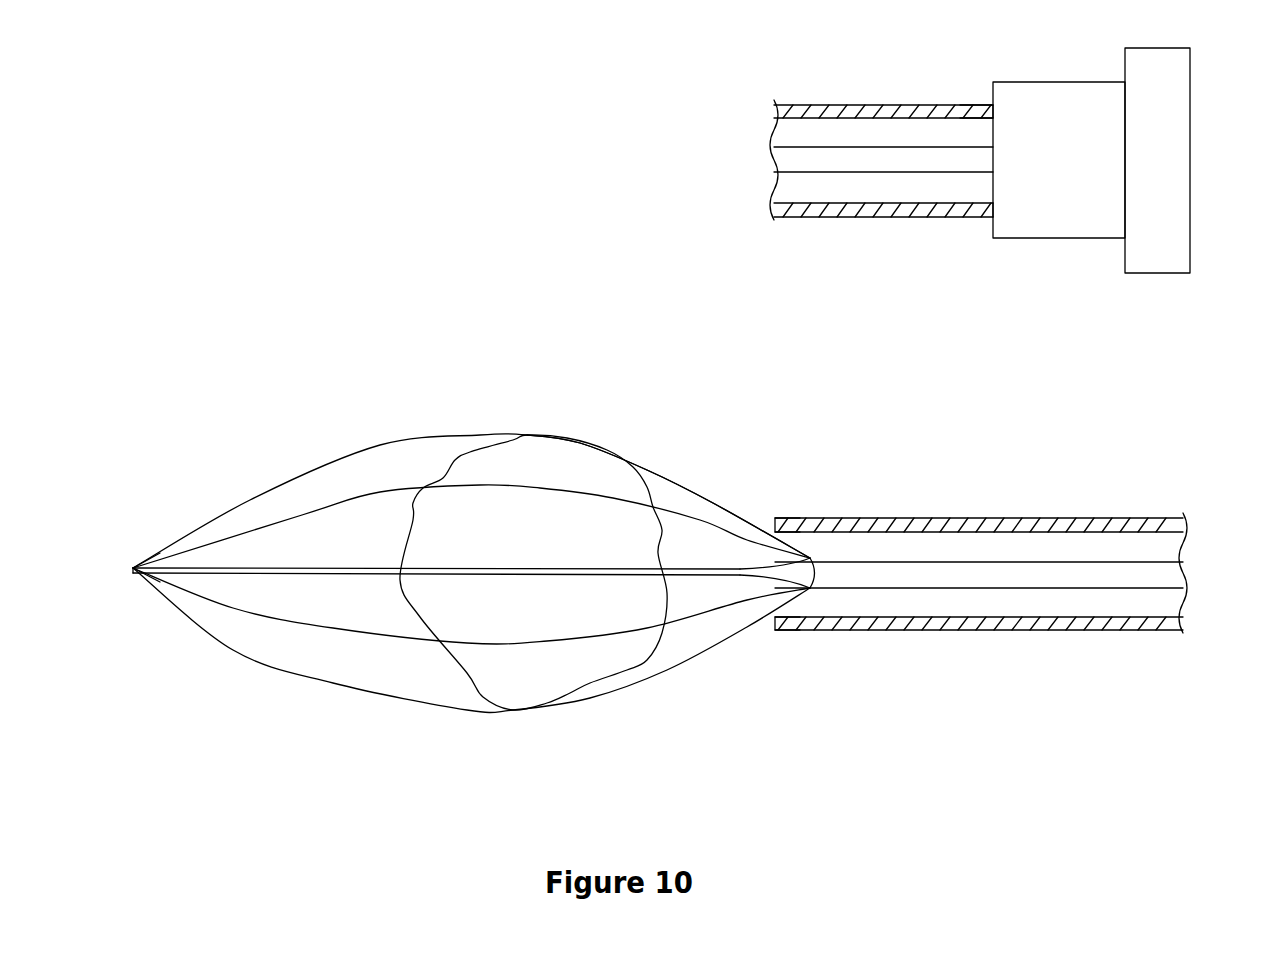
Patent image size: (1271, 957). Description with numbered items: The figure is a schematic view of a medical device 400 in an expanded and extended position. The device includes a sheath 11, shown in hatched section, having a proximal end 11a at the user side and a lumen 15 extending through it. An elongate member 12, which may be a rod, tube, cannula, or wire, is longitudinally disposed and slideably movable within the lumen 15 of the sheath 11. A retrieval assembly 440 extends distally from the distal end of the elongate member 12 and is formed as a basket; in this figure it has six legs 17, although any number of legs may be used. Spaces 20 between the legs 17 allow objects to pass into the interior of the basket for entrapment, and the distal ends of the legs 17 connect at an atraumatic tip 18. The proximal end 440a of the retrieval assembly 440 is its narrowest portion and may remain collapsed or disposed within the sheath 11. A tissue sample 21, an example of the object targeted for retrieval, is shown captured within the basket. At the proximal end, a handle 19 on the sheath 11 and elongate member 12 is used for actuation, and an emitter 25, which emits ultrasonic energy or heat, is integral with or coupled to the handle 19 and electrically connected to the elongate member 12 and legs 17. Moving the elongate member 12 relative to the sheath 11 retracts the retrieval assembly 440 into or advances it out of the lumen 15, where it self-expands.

The sheath 11 is at (867, 103).
The proximal end of sheath 11a is at (977, 103).
The elongate member 12 is at (892, 173).
The lumen 15 is at (855, 602).
The legs 17 is at (650, 470).
The tip 18 is at (133, 563).
The handle 19 is at (1080, 238).
The spaces 20 is at (302, 488).
The tissue sample 21 is at (565, 435).
The emitter 25 is at (1160, 273).
The medical device 400 is at (461, 558).
The retrieval assembly 440 is at (670, 687).
The proximal end of retrieval assembly 440a is at (803, 597).